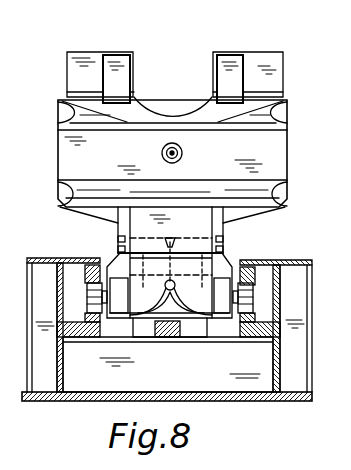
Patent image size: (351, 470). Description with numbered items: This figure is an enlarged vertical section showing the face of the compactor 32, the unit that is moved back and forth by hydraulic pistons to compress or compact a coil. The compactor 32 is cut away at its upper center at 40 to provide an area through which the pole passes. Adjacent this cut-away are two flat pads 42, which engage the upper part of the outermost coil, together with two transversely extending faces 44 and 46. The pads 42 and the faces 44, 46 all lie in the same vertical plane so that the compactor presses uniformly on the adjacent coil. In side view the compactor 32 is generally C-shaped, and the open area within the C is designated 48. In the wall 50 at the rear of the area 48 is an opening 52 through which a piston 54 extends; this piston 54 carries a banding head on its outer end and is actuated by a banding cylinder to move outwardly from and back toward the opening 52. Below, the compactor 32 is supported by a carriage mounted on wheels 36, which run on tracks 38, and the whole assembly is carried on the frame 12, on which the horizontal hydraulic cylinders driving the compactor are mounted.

The frame 12 is at (280, 363).
The compactor 32 is at (272, 70).
The wheels 36 is at (63, 297).
The tracks 38 is at (90, 338).
The cut-away area 40 is at (138, 70).
The flat pads 42 is at (113, 58).
The transversely extending face 44 is at (280, 127).
The transversely extending face 46 is at (268, 195).
The open area 48 is at (92, 166).
The wall 50 is at (280, 157).
The opening 52 is at (161, 156).
The piston 54 is at (184, 156).